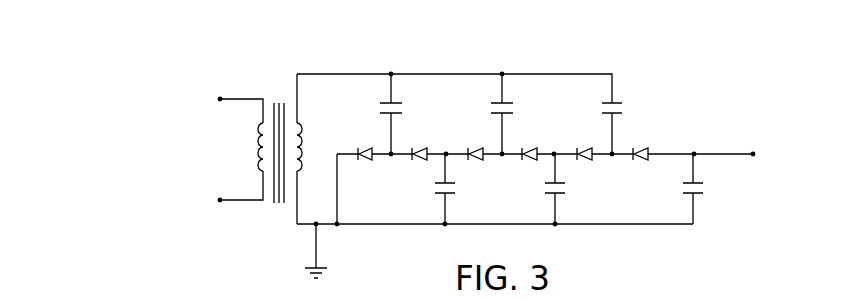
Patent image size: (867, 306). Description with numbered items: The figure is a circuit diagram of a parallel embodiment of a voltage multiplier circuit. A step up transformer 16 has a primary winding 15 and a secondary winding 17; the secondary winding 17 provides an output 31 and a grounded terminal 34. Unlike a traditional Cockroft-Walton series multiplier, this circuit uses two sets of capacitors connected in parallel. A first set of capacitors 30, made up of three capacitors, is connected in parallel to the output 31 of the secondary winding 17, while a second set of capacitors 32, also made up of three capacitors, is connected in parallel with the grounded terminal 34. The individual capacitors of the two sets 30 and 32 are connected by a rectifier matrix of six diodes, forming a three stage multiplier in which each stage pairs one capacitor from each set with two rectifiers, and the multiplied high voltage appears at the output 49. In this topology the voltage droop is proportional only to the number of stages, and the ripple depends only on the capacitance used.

The primary winding 15 is at (259, 165).
The step up transformer 16 is at (271, 80).
The secondary winding 17 is at (303, 149).
The first set of capacitors 30 is at (638, 102).
The output of the secondary winding 31 is at (316, 73).
The second set of capacitors 32 is at (722, 200).
The grounded terminal 34 is at (301, 226).
The output 49 is at (753, 154).